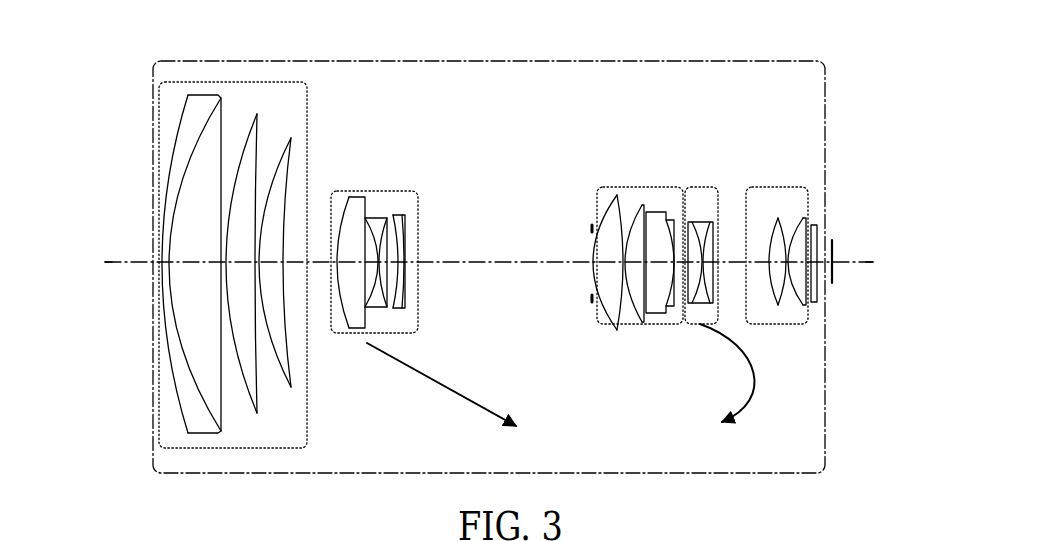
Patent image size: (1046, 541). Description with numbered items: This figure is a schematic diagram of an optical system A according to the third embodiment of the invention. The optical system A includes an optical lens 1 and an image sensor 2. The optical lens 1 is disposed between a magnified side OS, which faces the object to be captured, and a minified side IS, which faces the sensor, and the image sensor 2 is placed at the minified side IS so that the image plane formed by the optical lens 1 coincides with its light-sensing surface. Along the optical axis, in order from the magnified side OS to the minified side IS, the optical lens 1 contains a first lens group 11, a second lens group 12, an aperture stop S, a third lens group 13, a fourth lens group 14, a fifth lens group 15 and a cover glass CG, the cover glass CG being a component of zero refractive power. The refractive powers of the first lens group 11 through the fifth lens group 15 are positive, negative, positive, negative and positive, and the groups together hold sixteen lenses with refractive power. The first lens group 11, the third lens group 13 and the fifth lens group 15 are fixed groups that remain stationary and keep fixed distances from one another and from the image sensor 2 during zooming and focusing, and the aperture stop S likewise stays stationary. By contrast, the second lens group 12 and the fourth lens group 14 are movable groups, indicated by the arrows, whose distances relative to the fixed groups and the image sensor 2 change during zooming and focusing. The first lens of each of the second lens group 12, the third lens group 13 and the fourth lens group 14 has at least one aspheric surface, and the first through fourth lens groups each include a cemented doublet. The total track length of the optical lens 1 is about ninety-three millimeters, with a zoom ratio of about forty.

The optical lens 1 is at (376, 60).
The image sensor 2 is at (834, 264).
The first lens group 11 is at (308, 141).
The second lens group 12 is at (346, 191).
The third lens group 13 is at (625, 187).
The fourth lens group 14 is at (675, 187).
The fifth lens group 15 is at (752, 187).
The aperture stop S is at (592, 225).
The cover glass CG is at (817, 226).
The magnified side OS is at (121, 249).
The minified side IS is at (882, 249).
The optical system A is at (822, 48).